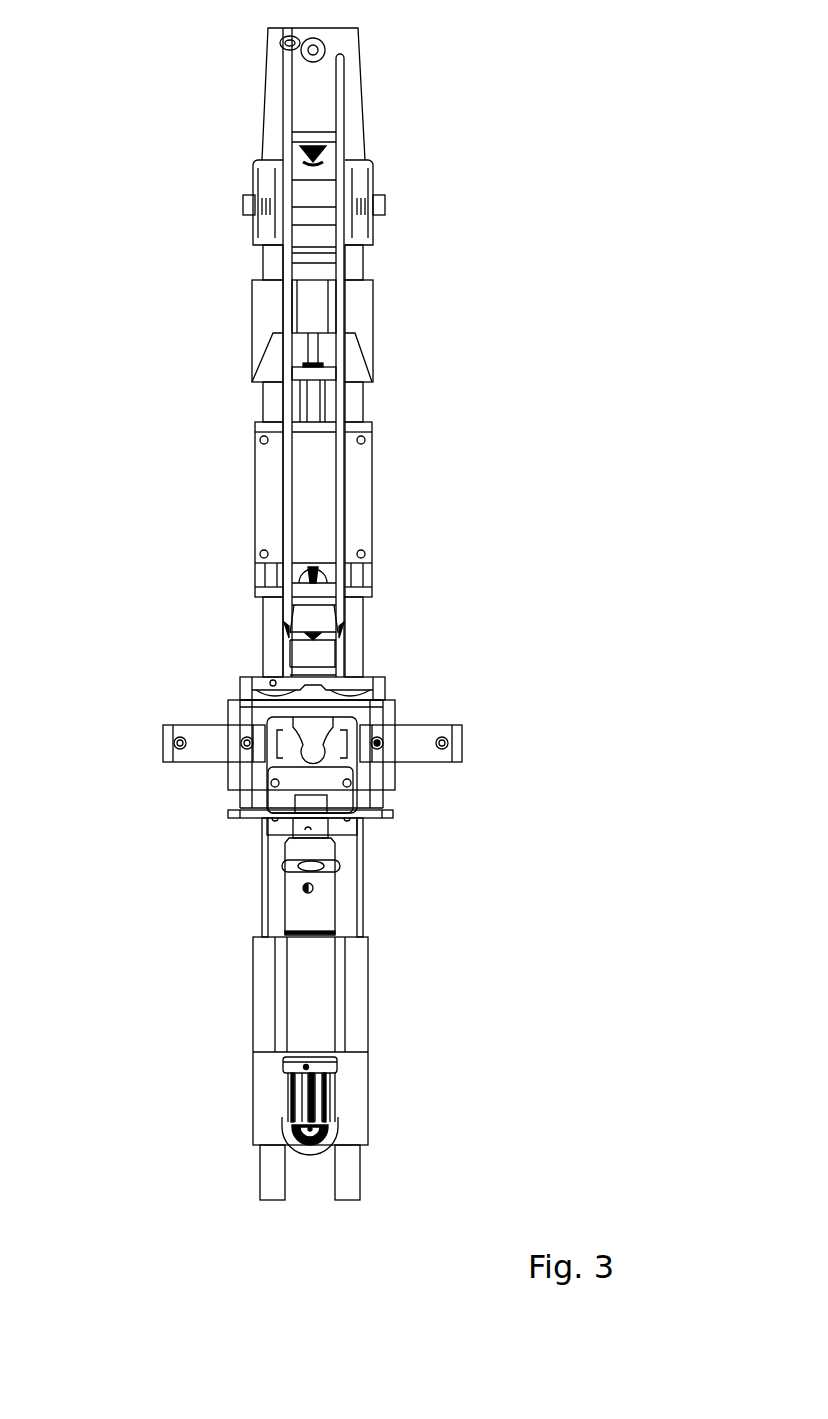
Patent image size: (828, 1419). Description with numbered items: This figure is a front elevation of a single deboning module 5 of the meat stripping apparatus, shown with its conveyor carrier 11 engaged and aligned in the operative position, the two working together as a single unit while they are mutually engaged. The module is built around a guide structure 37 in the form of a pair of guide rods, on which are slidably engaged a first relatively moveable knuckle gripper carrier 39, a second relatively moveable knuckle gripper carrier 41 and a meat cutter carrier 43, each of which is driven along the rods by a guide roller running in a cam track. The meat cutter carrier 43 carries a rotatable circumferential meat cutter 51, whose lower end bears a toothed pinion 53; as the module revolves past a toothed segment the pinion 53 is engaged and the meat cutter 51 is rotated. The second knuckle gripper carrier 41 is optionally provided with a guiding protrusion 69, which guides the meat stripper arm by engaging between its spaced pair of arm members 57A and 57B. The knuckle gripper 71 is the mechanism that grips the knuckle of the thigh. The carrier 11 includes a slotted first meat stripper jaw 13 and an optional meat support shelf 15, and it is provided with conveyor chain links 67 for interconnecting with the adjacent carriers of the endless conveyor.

The deboning module 5 is at (329, 614).
The first relatively moveable knuckle gripper carrier 39 is at (360, 311).
The arm member 57A is at (283, 400).
The arm member 57B is at (338, 400).
The second relatively moveable knuckle gripper carrier 41 is at (255, 486).
The guiding protrusion 69 is at (307, 486).
The knuckle gripper 71 is at (340, 637).
The slotted first meat stripper jaw 13 is at (377, 690).
The carrier 11 is at (232, 710).
The conveyor chain links 67 is at (205, 748).
The meat support shelf 15 is at (393, 818).
The guide structure 37 is at (273, 917).
The meat cutter 51 is at (323, 917).
The meat cutter carrier 43 is at (262, 986).
The toothed pinion 53 is at (303, 1107).